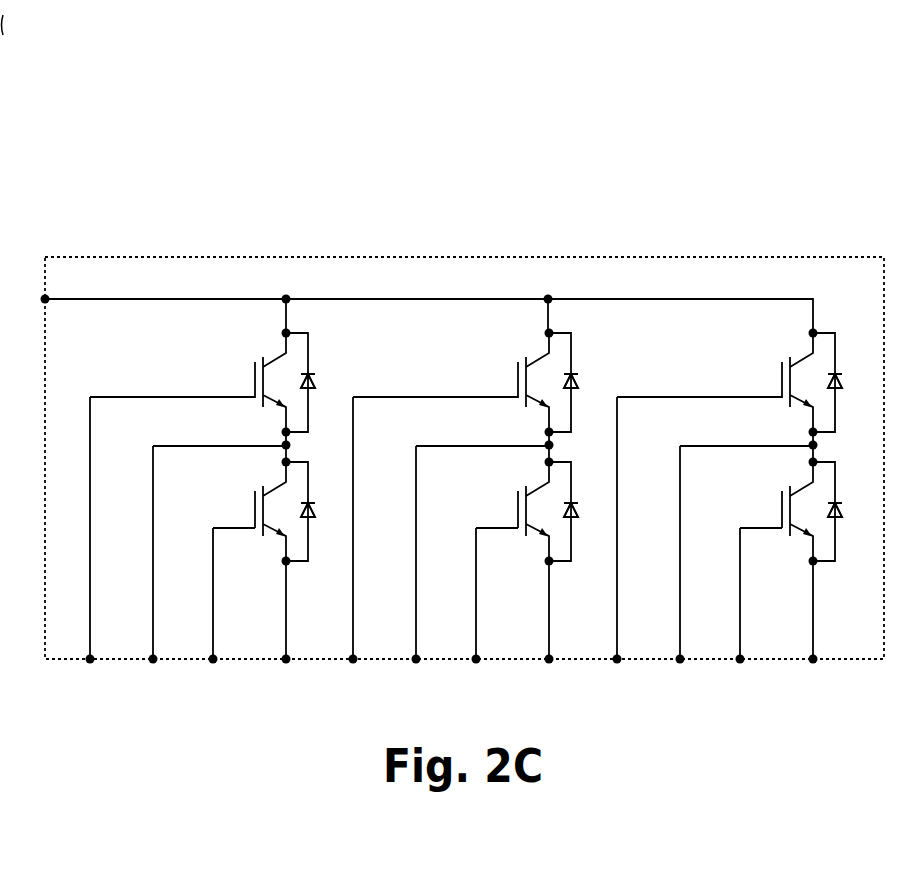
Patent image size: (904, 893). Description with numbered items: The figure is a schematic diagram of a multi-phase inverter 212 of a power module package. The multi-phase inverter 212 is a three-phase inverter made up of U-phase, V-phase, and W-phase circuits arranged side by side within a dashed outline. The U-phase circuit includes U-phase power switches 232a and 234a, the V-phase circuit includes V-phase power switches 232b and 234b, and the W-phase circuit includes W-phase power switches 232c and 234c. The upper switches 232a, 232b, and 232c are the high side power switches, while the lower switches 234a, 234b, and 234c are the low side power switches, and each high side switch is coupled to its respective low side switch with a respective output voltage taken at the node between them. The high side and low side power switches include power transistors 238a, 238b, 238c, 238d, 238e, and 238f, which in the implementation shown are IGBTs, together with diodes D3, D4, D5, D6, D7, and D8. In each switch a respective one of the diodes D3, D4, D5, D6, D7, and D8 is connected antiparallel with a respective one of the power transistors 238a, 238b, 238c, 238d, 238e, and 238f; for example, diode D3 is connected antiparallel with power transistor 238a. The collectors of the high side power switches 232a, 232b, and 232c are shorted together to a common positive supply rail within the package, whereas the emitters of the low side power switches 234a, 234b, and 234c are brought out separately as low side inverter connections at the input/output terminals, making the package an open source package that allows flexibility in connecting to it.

The multi-phase inverter 212 is at (796, 96).
The U-phase power switch 232a is at (229, 349).
The V-phase power switch 232b is at (492, 349).
The W-phase power switch 232c is at (757, 349).
The U-phase power switch 234a is at (233, 484).
The V-phase power switch 234b is at (496, 484).
The W-phase power switch 234c is at (760, 484).
The power transistor 238a is at (253, 391).
The power transistor 238b is at (516, 391).
The power transistor 238c is at (780, 391).
The power transistor 238d is at (253, 522).
The power transistor 238e is at (516, 522).
The power transistor 238f is at (780, 522).
The diode D3 is at (320, 370).
The diode D4 is at (320, 498).
The diode D5 is at (583, 370).
The diode D6 is at (583, 498).
The diode D7 is at (847, 370).
The diode D8 is at (847, 498).